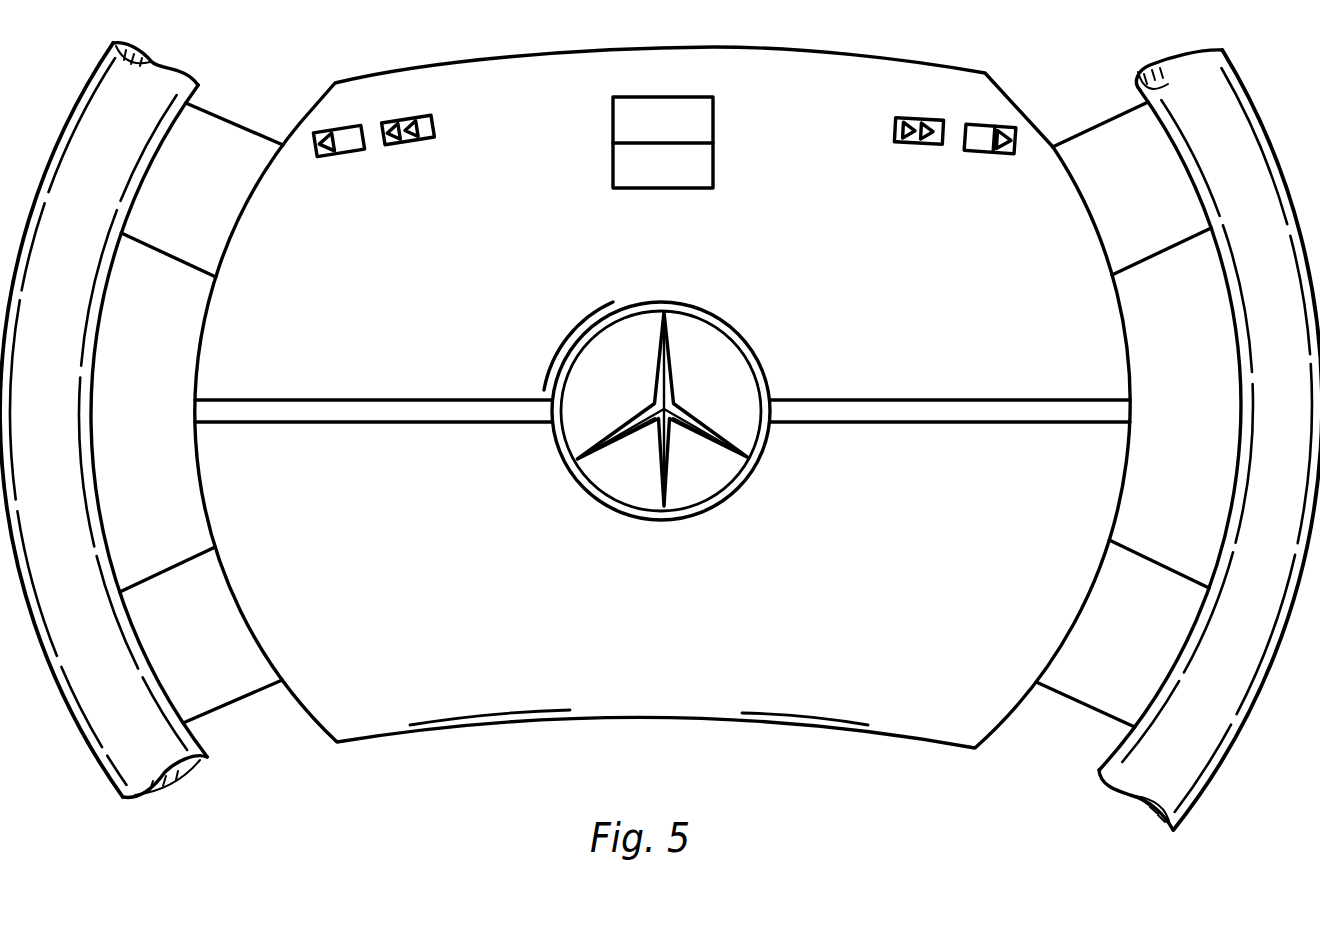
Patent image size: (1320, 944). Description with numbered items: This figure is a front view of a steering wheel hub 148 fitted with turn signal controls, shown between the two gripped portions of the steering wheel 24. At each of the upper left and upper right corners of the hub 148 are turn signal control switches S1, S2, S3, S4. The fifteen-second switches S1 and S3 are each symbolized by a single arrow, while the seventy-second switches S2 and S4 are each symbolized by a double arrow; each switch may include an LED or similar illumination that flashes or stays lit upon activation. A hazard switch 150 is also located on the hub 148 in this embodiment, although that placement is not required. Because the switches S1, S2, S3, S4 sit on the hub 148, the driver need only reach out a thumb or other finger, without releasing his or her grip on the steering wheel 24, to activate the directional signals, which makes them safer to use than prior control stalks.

The steering wheel 24 is at (58, 412).
The steering wheel hub 148 is at (519, 268).
The hazard switch 150 is at (717, 149).
The turn signal control switch S1 is at (325, 156).
The turn signal control switch S2 is at (413, 143).
The turn signal control switch S3 is at (1003, 152).
The turn signal control switch S4 is at (898, 143).